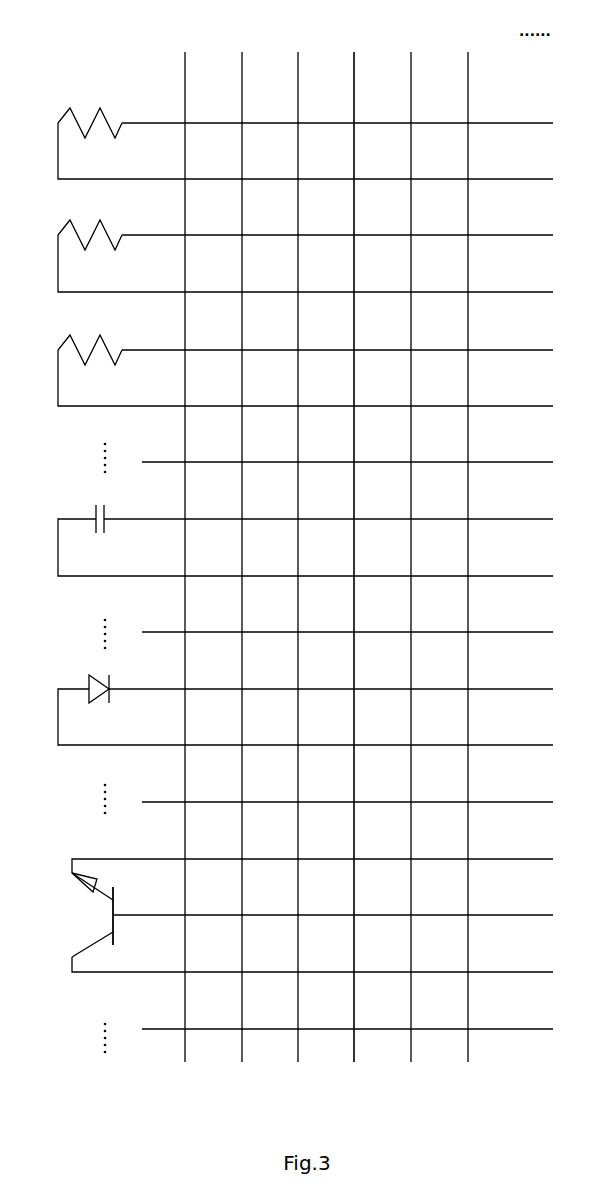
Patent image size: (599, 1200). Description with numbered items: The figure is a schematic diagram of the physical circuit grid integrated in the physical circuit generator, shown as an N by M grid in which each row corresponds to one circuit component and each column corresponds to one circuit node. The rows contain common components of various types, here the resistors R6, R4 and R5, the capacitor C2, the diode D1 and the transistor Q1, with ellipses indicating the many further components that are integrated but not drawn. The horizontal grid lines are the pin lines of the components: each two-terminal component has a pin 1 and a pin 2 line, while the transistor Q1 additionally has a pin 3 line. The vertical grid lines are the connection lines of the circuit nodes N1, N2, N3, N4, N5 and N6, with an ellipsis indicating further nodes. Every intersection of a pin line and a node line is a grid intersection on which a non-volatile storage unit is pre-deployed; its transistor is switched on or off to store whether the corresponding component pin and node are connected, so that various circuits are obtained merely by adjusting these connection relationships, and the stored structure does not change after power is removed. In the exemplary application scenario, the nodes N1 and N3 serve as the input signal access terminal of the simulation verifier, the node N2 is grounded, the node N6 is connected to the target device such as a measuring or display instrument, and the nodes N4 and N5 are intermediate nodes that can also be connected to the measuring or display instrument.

The pin 1 is at (328, 508).
The pin 2 is at (293, 537).
The pin 3 is at (312, 854).
The resistor R6 is at (90, 113).
The resistor R4 is at (90, 226).
The resistor R5 is at (90, 340).
The capacitor C2 is at (99, 531).
The diode D1 is at (102, 702).
The transistor Q1 is at (79, 915).
The node N1 is at (183, 542).
The node N2 is at (240, 542).
The node N3 is at (296, 542).
The node N4 is at (352, 542).
The node N5 is at (409, 542).
The node N6 is at (466, 542).